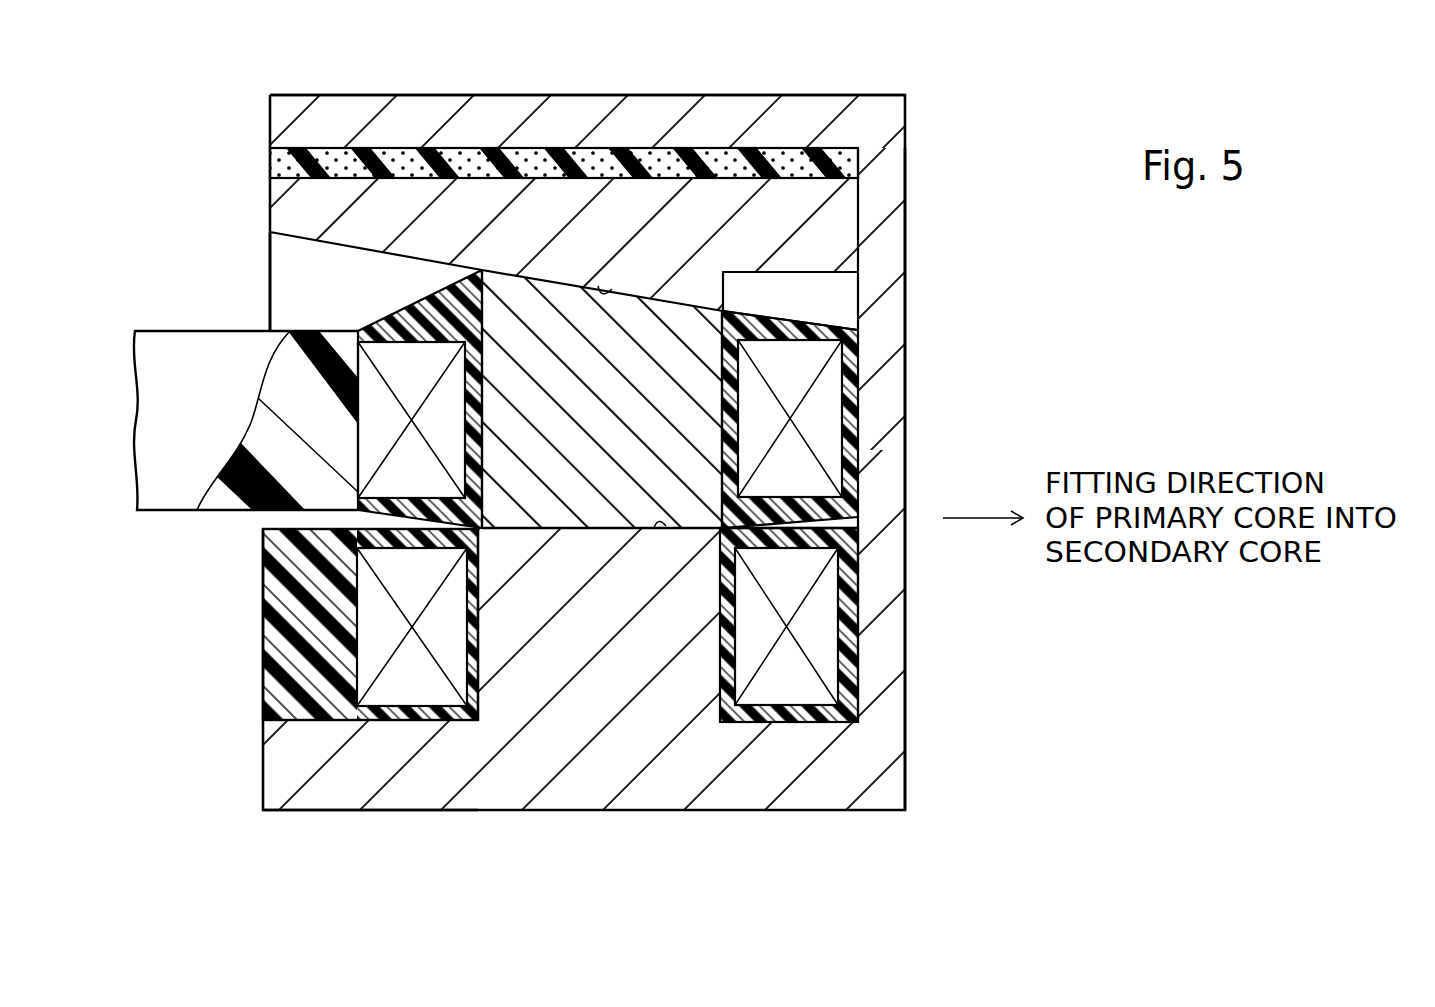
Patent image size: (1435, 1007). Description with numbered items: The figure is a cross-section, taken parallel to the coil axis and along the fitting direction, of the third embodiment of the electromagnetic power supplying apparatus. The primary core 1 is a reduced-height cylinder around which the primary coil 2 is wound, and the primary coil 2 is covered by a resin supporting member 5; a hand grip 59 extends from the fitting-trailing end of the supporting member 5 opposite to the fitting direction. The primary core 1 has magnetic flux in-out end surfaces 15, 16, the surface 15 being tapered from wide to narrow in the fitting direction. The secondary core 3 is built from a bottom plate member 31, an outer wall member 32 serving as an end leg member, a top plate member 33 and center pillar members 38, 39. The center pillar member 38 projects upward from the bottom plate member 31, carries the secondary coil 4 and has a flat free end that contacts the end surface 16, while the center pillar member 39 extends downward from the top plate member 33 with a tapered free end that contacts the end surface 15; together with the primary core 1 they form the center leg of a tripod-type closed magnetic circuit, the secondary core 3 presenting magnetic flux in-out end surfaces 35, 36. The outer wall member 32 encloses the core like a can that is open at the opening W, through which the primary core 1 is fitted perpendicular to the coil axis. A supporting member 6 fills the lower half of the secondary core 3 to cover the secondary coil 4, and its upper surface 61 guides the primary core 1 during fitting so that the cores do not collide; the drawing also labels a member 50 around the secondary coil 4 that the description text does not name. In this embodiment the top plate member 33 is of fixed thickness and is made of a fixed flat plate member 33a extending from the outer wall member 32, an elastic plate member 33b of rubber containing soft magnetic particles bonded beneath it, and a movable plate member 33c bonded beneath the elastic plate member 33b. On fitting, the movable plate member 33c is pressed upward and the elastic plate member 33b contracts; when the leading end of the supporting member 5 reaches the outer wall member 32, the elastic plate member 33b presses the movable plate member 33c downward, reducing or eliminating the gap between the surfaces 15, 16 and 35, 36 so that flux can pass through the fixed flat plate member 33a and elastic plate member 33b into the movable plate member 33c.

The primary core 1 is at (593, 460).
The primary coil 2 is at (822, 413).
The secondary core 3 is at (643, 815).
The secondary coil 4 is at (780, 695).
The supporting member 5 is at (425, 310).
The supporting member 6 is at (295, 625).
The magnetic flux in-out end surface 15 is at (548, 275).
The magnetic flux in-out end surface 16 is at (522, 529).
The bottom plate member 31 is at (347, 786).
The outer wall member 32 is at (875, 632).
The top plate member 33 is at (258, 166).
The fixed flat plate member 33a is at (808, 118).
The elastic plate member 33b is at (858, 162).
The movable plate member 33c is at (515, 205).
The magnetic flux in-out end surface 35 is at (600, 288).
The magnetic flux in-out end surface 36 is at (660, 530).
The center pillar member 38 is at (622, 643).
The center pillar member 39 is at (677, 290).
The secondary bobbin 50 is at (850, 440).
The hand grip 59 is at (165, 347).
The upper surface 61 is at (295, 520).
The opening W is at (258, 292).